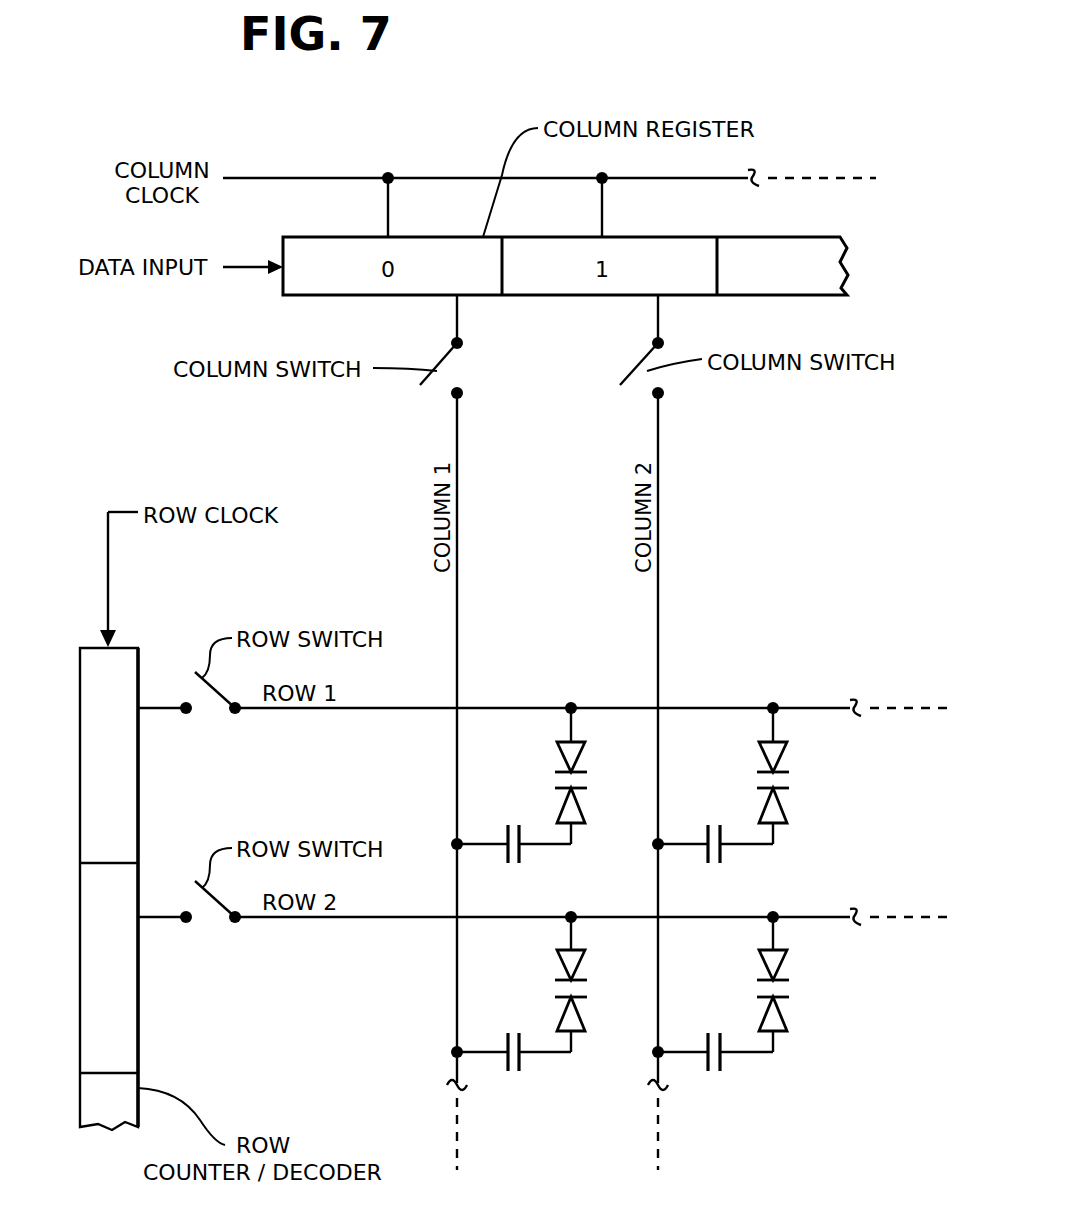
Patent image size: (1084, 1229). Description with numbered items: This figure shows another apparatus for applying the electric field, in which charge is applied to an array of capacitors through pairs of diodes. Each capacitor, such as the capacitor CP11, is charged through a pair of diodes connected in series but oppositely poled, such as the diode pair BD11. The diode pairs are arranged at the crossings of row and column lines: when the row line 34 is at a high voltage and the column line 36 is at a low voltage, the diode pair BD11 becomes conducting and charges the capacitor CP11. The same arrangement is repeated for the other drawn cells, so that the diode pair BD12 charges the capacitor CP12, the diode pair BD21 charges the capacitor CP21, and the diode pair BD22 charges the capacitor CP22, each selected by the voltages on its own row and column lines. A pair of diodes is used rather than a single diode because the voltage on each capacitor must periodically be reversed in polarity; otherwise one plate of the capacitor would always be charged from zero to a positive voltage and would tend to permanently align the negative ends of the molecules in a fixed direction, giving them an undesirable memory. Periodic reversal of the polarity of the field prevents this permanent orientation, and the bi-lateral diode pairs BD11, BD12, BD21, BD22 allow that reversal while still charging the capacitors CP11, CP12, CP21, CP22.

The line 34 is at (393, 709).
The line 36 is at (457, 634).
The pair of diodes in series, oppositely poled BD11 is at (560, 780).
The pair of diodes in series, oppositely poled BD12 is at (787, 781).
The pair of diodes in series, oppositely poled BD21 is at (560, 988).
The pair of diodes in series, oppositely poled BD22 is at (787, 988).
The capacitor CP11 is at (523, 856).
The capacitor CP12 is at (724, 856).
The capacitor CP21 is at (523, 1064).
The capacitor CP22 is at (724, 1064).